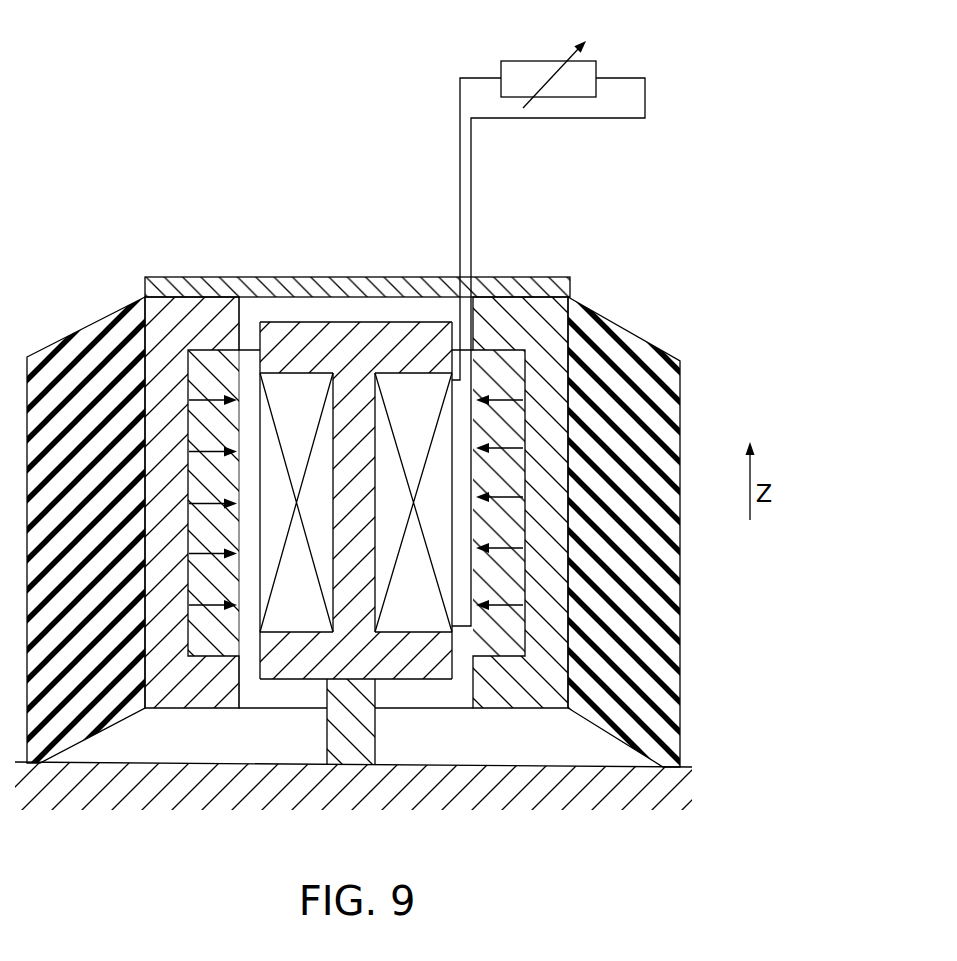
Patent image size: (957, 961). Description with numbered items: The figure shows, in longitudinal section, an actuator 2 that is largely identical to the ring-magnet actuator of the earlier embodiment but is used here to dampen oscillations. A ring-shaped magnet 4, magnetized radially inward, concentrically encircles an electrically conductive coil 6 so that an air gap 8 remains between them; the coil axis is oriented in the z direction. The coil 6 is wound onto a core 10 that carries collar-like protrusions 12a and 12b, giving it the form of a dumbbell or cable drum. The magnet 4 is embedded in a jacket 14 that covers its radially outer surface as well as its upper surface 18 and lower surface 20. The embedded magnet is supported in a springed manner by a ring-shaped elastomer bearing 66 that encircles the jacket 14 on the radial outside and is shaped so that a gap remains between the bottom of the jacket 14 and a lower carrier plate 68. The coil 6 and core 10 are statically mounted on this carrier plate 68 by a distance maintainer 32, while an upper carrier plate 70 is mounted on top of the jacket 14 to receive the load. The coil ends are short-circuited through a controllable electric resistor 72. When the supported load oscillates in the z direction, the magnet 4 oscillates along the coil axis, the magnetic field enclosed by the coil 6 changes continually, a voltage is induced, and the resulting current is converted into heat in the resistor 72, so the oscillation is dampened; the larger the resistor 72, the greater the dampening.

The actuator 2 is at (375, 468).
The ring-shaped magnet 4 is at (196, 640).
The coil 6 is at (438, 518).
The air gap 8 is at (247, 642).
The core 10 is at (355, 555).
The collar-like protrusion 12a is at (282, 333).
The collar-like protrusion 12b is at (432, 662).
The jacket 14 is at (150, 605).
The upper surface 18 is at (208, 345).
The lower surface 20 is at (213, 655).
The distance maintainer 32 is at (362, 718).
The elastomer bearing 66 is at (667, 675).
The carrier plate 68 is at (583, 800).
The carrier plate 70 is at (545, 286).
The controllable electric resistor 72 is at (588, 72).